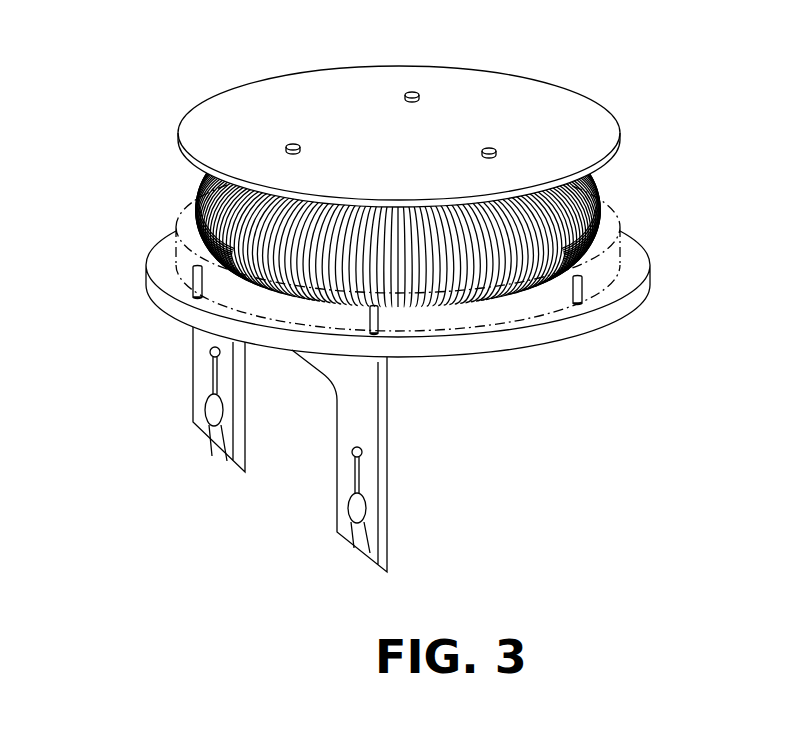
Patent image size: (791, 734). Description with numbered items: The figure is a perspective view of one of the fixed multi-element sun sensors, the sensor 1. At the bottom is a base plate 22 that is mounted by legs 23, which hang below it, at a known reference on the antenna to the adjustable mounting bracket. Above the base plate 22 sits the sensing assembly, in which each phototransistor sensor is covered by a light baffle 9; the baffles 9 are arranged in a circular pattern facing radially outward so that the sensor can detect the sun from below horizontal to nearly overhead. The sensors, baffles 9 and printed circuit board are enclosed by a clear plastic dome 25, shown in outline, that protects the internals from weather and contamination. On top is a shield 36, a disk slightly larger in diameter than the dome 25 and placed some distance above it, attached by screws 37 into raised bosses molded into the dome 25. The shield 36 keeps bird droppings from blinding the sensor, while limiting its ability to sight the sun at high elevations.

The sensor 1 is at (132, 277).
The light baffle 9 is at (249, 296).
The base plate 22 is at (605, 322).
The legs 23 is at (198, 423).
The clear plastic dome 25 is at (176, 195).
The shield 36 is at (587, 107).
The screws 37 is at (294, 143).